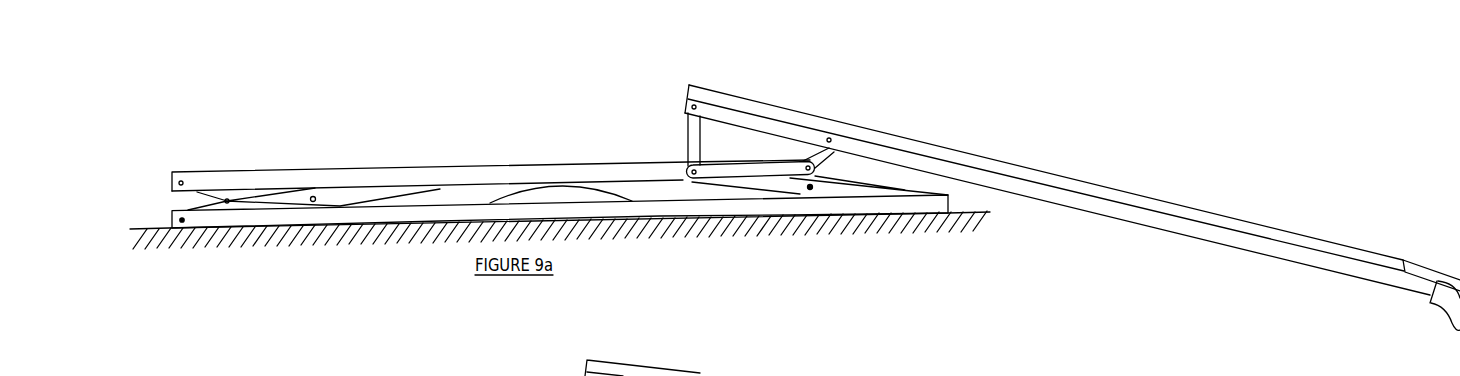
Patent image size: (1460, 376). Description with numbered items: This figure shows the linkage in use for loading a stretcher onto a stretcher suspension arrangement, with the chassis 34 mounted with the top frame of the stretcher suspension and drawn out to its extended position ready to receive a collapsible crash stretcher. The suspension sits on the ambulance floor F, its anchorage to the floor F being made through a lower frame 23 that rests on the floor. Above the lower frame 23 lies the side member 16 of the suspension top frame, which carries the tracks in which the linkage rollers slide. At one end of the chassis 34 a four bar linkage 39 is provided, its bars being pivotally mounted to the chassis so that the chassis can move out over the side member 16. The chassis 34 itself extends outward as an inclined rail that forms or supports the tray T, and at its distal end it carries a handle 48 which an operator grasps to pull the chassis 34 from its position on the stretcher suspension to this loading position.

The side member 16 is at (405, 172).
The lower frame 23 is at (400, 217).
The four bar linkage 39 is at (817, 162).
The tray T is at (858, 131).
The chassis 34 is at (1160, 217).
The handle 48 is at (1447, 305).
The floor F is at (765, 222).